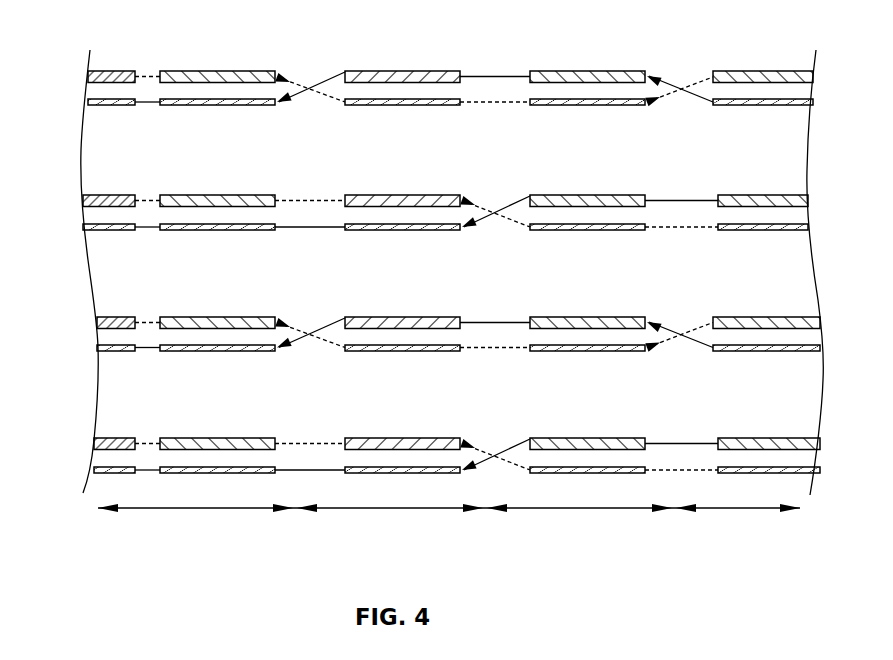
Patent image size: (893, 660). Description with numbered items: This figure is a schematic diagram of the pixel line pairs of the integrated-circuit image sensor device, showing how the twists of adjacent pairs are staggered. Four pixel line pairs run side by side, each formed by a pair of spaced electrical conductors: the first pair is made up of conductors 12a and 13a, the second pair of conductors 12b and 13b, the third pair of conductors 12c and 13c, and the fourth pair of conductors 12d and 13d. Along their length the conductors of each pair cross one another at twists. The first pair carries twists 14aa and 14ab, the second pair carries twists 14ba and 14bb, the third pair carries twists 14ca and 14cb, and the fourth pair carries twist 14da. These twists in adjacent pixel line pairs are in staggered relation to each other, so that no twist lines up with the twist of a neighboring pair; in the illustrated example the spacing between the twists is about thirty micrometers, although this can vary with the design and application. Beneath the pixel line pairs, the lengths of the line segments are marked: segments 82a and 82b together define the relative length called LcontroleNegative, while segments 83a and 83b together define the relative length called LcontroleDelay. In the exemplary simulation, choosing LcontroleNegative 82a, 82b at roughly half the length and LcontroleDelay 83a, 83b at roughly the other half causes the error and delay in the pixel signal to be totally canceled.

The pixel line pair 12a is at (120, 71).
The pixel line pair 13a is at (98, 105).
The pixel line pair 12b is at (98, 196).
The pixel line pair 13b is at (97, 229).
The pixel line pair 12c is at (103, 317).
The pixel line pair 13c is at (116, 348).
The pixel line pair 12d is at (104, 439).
The pixel line pair 13d is at (108, 472).
The twist 14aa is at (317, 66).
The twist 14ab is at (677, 64).
The twist 14ba is at (310, 186).
The twist 14bb is at (498, 187).
The twist 14ca is at (310, 310).
The twist 14cb is at (680, 310).
The twist 14da is at (498, 436).
The LcontroleNegative length 82a is at (205, 512).
The LcontroleDelay length 83a is at (390, 511).
The LcontroleNegative length 82b is at (574, 511).
The LcontroleDelay length 83b is at (760, 511).